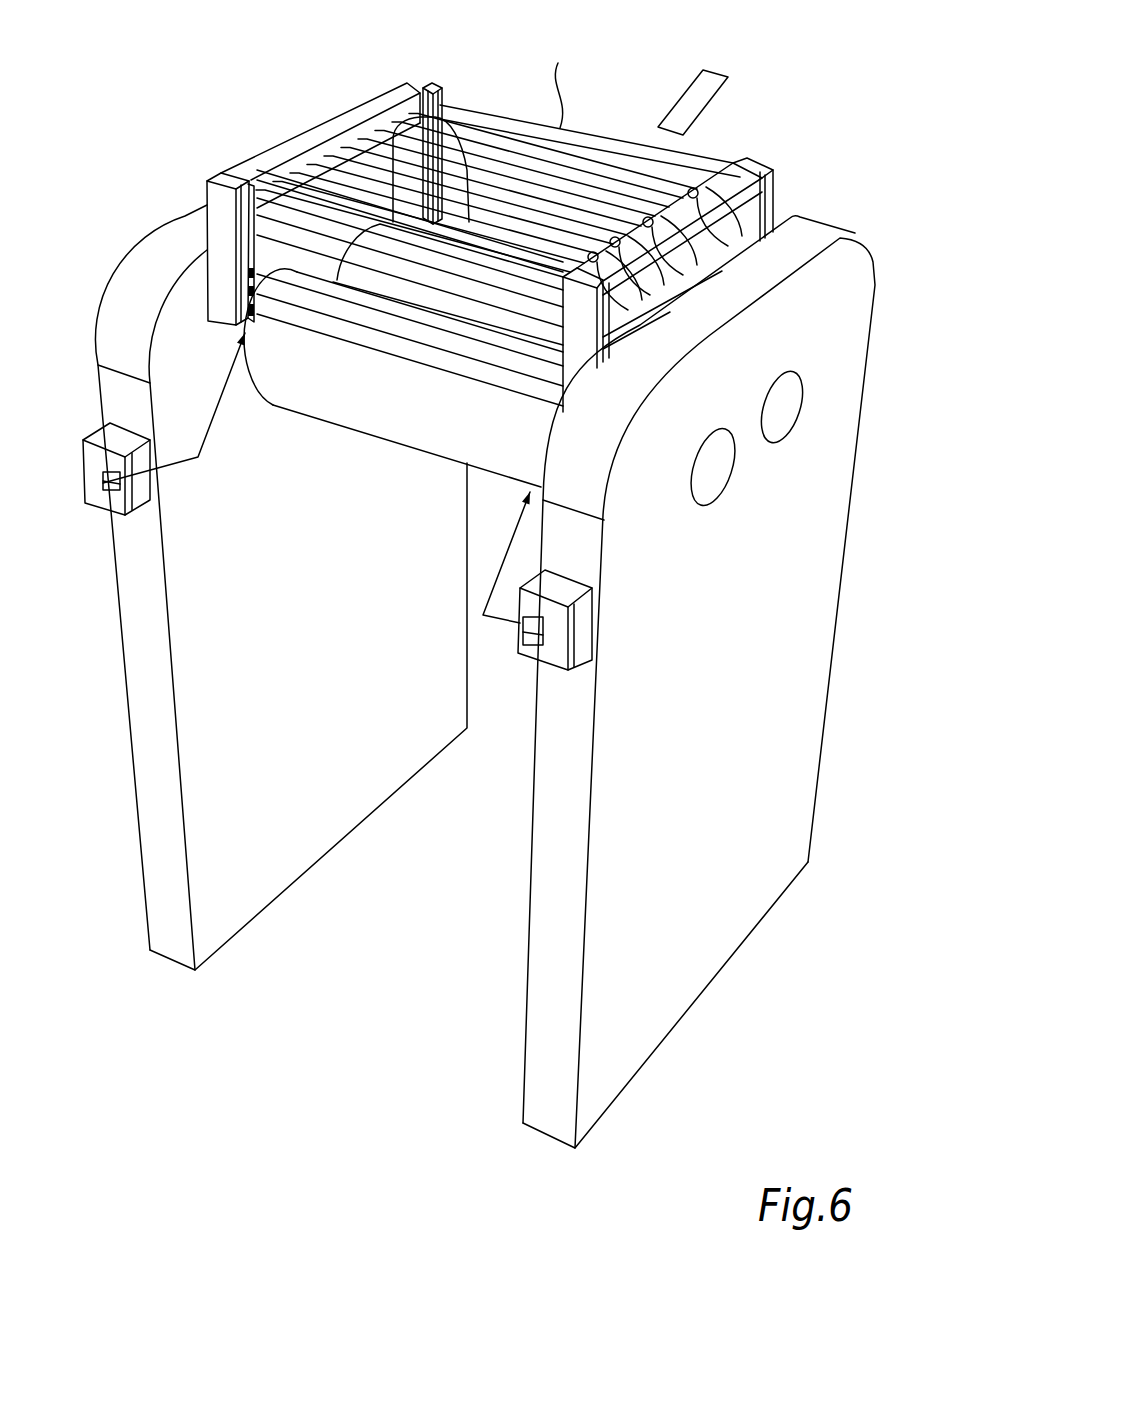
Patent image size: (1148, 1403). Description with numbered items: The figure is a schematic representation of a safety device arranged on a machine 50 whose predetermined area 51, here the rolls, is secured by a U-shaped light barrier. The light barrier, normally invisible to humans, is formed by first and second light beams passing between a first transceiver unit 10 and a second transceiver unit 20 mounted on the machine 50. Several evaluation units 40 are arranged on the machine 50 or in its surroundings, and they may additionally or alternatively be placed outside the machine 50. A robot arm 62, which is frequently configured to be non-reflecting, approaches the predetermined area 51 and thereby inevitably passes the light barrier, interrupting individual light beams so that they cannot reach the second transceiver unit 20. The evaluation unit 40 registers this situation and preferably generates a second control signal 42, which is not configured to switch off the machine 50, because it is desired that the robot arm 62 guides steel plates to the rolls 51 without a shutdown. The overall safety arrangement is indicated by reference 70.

The first transceiver unit 10 is at (437, 88).
The second transceiver unit 20 is at (617, 284).
The evaluation unit 40 is at (143, 484).
The second control signal 42 is at (218, 412).
The machine 50 is at (803, 806).
The predetermined area 51 is at (383, 432).
The robot arm 62 is at (713, 90).
The detection system 70 is at (815, 87).